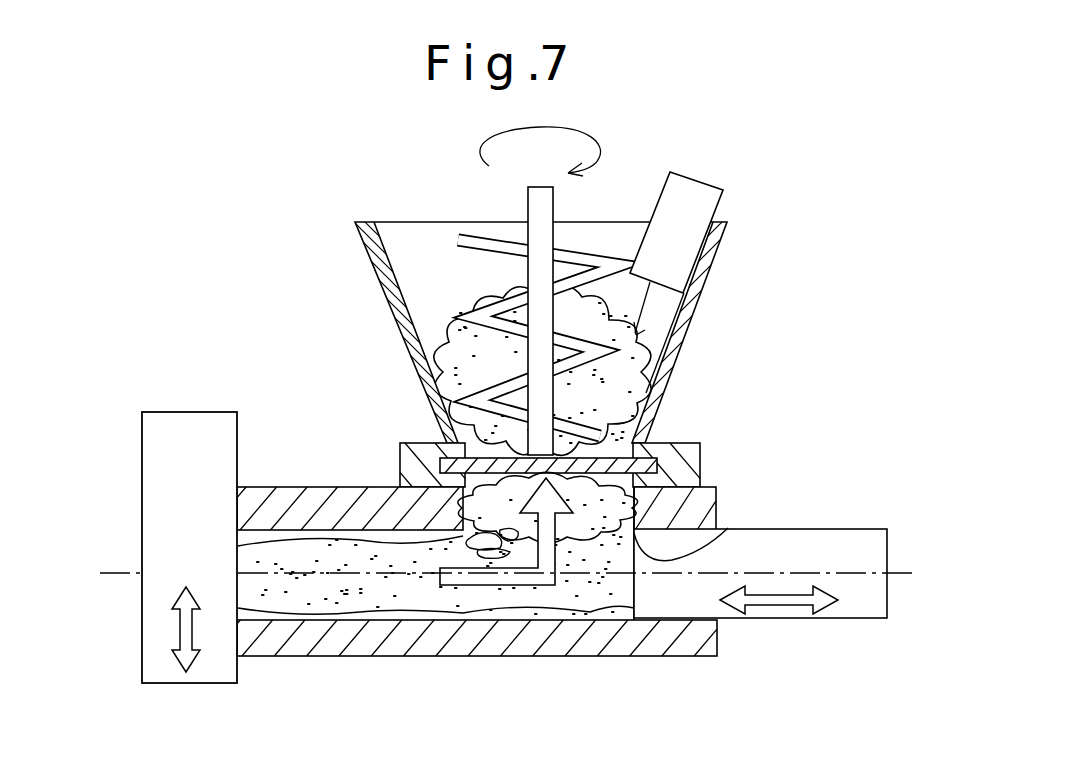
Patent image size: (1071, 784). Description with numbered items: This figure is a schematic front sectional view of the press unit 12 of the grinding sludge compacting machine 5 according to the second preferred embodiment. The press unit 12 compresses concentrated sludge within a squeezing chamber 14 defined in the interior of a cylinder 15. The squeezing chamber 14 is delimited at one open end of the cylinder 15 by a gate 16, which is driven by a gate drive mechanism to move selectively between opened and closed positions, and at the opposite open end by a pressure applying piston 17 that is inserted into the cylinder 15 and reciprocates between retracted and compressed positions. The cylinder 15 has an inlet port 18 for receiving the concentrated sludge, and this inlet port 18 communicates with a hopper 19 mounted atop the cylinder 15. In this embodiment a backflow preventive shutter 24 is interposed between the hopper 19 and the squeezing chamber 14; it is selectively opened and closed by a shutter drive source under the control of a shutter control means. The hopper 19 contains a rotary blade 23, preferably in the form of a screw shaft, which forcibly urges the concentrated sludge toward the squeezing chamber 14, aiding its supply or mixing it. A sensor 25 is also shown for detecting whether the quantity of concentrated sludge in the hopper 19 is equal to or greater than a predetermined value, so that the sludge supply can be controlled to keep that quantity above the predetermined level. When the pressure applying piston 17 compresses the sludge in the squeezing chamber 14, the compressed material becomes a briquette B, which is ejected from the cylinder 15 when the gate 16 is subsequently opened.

The grinding sludge compacting machine 5 is at (285, 282).
The press unit 12 is at (582, 662).
The squeezing chamber 14 is at (346, 603).
The cylinder 15 is at (436, 640).
The gate 16 is at (162, 447).
The pressure applying piston 17 is at (812, 547).
The inlet port 18 is at (728, 528).
The hopper 19 is at (698, 302).
The rotary blade 23 is at (490, 240).
The backflow preventive shutter 24 is at (675, 443).
The sensor 25 is at (687, 212).
The briquette B is at (300, 547).